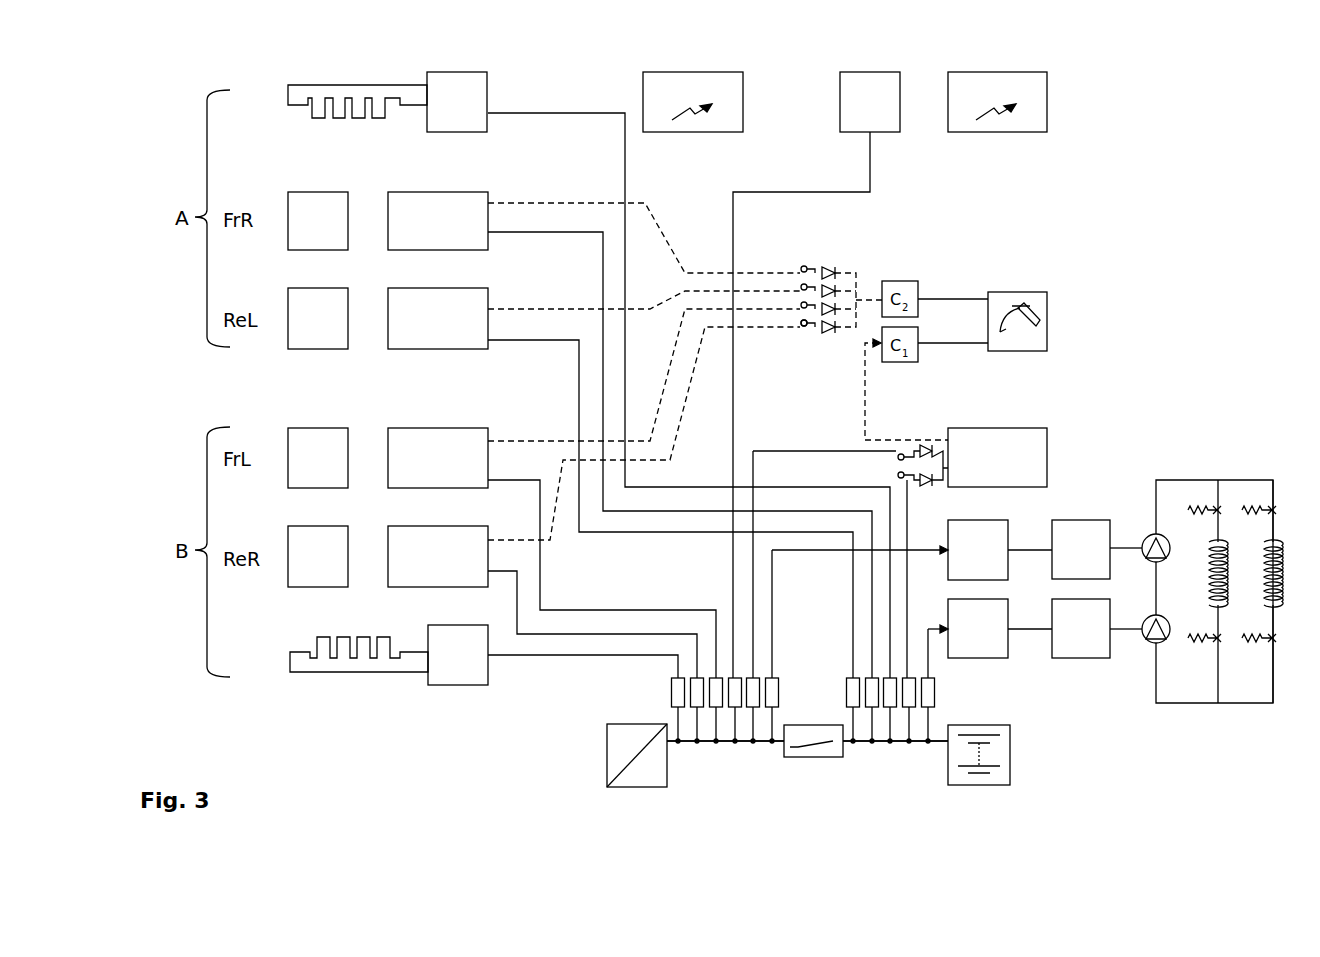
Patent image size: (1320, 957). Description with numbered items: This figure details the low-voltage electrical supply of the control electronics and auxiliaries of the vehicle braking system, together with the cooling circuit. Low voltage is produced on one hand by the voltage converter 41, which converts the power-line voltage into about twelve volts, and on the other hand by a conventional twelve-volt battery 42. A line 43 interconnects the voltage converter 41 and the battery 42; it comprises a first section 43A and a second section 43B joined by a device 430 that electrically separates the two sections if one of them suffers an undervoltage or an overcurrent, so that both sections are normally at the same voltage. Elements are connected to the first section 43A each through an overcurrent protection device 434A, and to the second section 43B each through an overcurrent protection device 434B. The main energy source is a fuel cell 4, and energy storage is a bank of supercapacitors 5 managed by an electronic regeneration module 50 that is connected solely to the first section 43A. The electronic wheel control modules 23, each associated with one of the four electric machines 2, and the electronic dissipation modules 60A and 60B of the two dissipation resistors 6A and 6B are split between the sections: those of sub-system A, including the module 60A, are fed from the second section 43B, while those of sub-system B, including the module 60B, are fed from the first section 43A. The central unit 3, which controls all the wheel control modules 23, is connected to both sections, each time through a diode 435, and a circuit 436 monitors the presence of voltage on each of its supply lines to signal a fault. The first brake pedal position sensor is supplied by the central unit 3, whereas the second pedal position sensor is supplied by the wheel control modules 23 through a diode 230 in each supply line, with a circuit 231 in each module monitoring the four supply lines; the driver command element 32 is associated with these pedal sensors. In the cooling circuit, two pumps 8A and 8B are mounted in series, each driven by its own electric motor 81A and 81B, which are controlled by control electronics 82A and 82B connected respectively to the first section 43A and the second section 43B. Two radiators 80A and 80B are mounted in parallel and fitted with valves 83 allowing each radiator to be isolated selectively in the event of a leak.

The electric machine 2 is at (313, 191).
The electronic wheel control module 23 is at (430, 191).
The electrical dissipation resistor 6A is at (370, 84).
The electronic dissipation module 60A is at (453, 71).
The electrical dissipation resistor 6B is at (370, 673).
The electronic dissipation module 60B is at (458, 686).
The fuel cell 4 is at (693, 71).
The electronic regeneration module 50 is at (875, 71).
The bank of supercapacitors 5 is at (998, 71).
The diode 230 is at (827, 266).
The monitoring circuit 231 is at (805, 330).
The driver control indicator 32 is at (1015, 291).
The central unit 3 is at (1040, 436).
The monitoring circuit 436 is at (899, 452).
The diode 435 is at (923, 446).
The control electronics 82A is at (973, 520).
The control electronics 82B is at (972, 659).
The electric motor 81A is at (1065, 520).
The electric motor 81B is at (1065, 658).
The pump 8A is at (1150, 534).
The pump 8B is at (1150, 643).
The radiator 80A is at (1210, 594).
The radiator 80B is at (1266, 588).
The valve 83 is at (1250, 500).
The overcurrent protection device 434A is at (779, 690).
The overcurrent protection device 434B is at (935, 695).
The line 43 is at (754, 785).
The first section 43A is at (697, 744).
The second section 43B is at (895, 744).
The separating device 430 is at (812, 758).
The voltage converter 41 is at (606, 768).
The battery 42 is at (1011, 766).